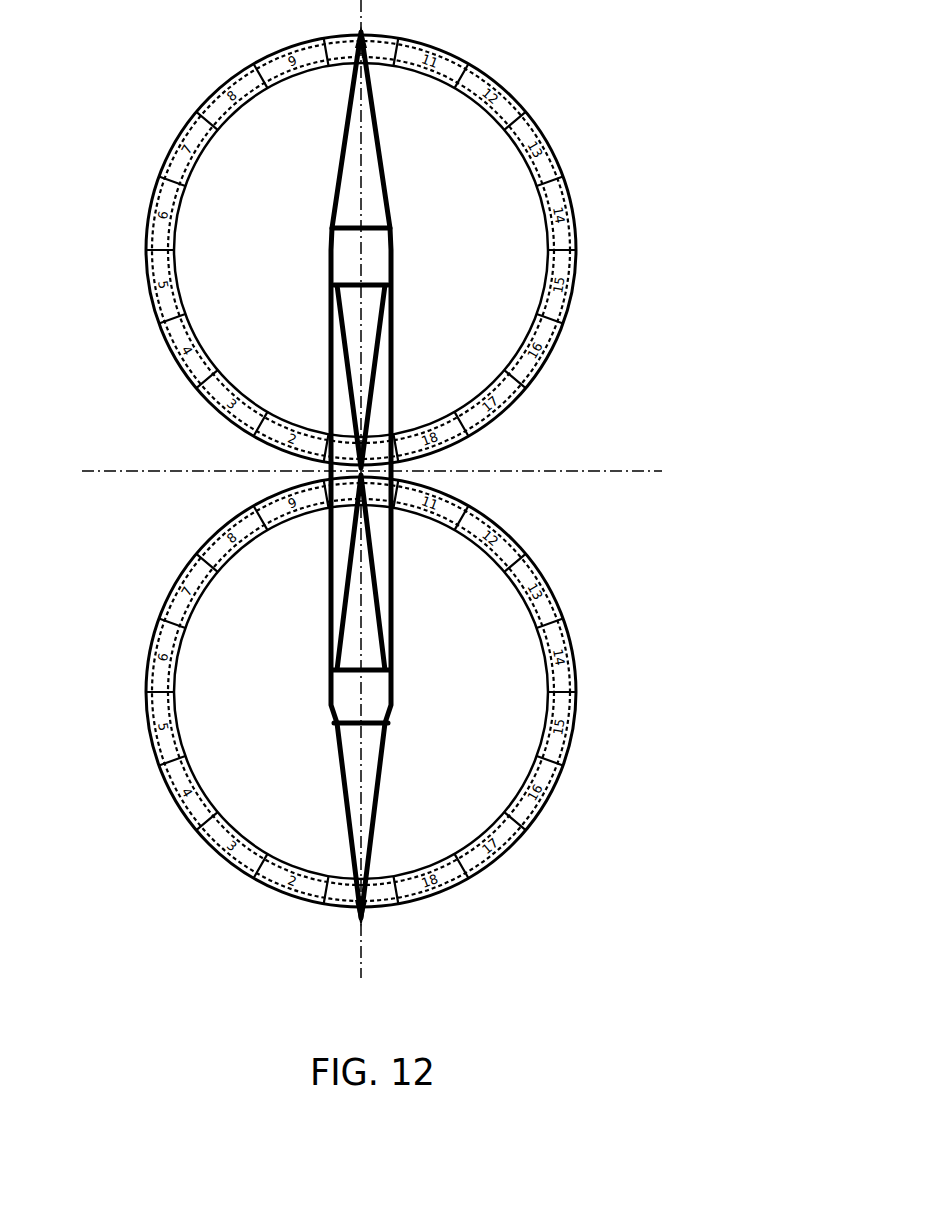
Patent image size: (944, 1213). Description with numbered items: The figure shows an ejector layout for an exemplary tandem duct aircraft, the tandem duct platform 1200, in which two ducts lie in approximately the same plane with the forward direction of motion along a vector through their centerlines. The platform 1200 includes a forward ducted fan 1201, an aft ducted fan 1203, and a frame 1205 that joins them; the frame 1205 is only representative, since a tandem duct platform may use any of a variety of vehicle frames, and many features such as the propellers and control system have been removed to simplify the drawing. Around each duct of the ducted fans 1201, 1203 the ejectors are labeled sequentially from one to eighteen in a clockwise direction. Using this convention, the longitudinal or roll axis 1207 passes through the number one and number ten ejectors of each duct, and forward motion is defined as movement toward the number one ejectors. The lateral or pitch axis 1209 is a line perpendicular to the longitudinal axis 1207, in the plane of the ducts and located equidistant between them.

The tandem duct platform 1200 is at (395, 489).
The forward ducted fan 1201 is at (116, 725).
The aft ducted fan 1203 is at (118, 245).
The frame 1205 is at (393, 337).
The longitudinal (roll) axis 1207 is at (370, 957).
The lateral (pitch) axis 1209 is at (587, 468).